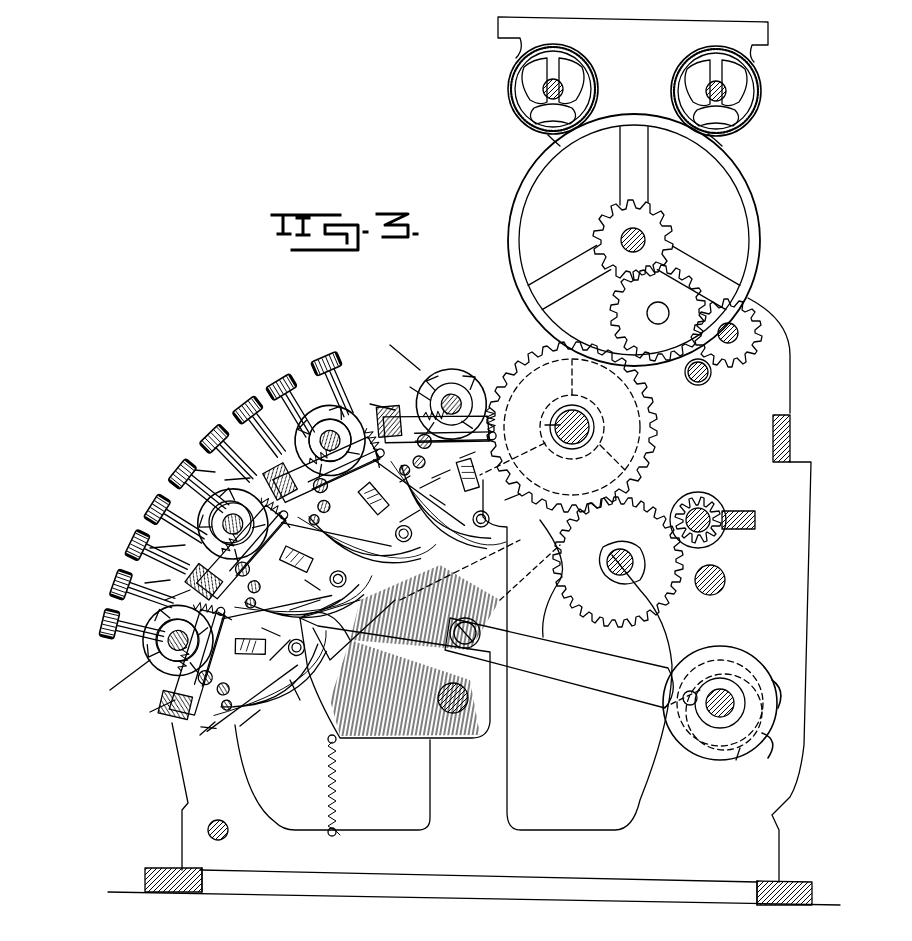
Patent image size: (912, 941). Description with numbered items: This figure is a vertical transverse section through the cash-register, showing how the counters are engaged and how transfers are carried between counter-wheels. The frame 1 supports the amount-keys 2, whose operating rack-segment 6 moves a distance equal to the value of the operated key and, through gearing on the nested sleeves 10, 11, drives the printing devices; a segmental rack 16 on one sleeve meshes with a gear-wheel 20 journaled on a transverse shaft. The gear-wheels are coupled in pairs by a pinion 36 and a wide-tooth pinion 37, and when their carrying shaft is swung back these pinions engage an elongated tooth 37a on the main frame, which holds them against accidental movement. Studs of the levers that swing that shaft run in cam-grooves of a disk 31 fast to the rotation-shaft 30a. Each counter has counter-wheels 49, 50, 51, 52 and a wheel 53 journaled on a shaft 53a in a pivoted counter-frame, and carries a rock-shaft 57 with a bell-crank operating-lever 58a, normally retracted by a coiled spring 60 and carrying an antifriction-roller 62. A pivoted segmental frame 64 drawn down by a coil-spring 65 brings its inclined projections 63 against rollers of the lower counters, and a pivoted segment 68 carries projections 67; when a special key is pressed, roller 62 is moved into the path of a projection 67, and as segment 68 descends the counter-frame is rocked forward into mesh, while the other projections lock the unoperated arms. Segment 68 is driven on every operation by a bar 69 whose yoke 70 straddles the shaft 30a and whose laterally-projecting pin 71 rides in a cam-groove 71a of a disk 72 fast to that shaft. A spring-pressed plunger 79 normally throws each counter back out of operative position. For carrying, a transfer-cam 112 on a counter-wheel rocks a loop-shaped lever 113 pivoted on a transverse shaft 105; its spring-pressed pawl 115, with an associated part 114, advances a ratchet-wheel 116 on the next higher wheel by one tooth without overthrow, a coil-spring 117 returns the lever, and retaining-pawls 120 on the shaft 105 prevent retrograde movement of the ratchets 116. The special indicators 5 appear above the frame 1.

The frame 1 is at (474, 461).
The amount-keys 2 is at (110, 540).
The special indicators 5 is at (668, 78).
The operating rack-segment 6 is at (577, 655).
The nested sleeve 10 is at (600, 436).
The nested sleeve 11 is at (572, 405).
The segmental rack 16 is at (602, 476).
The gear-wheel 20 is at (635, 356).
The rotation-shaft 30a is at (716, 690).
The disk 31 is at (633, 560).
The pinion 36 is at (726, 578).
The wide-tooth pinion 37 is at (698, 495).
The elongated tooth 37a is at (741, 509).
The indicator wheel 49 is at (168, 642).
The indicator wheel 50 is at (218, 520).
The indicator wheel 51 is at (305, 400).
The indicator wheel 52 is at (437, 459).
The cam disk 53 is at (225, 522).
The shaft 53a is at (160, 640).
The rock-shaft 57 is at (530, 571).
The bell-crank operating-lever 58a is at (355, 690).
The coiled spring 60 is at (353, 572).
The antifriction-roller 62 is at (392, 552).
The inclined projection 63 is at (354, 627).
The pivoted segmental frame 64 is at (395, 679).
The coil-spring 65 is at (326, 768).
The projection 67 is at (352, 606).
The pivoted segment 68 is at (435, 595).
The bar 69 is at (559, 663).
The yoke 70 is at (760, 748).
The laterally-projecting pin 71 is at (684, 700).
The cam-groove 71a is at (690, 728).
The disk 72 is at (739, 773).
The spring-pressed plunger 79 is at (362, 601).
The transverse shaft 105 is at (360, 588).
The transfer-cam 112 is at (500, 372).
The loop-shaped lever 113 is at (120, 652).
The stop 114 is at (263, 489).
The spring-pressed pawl 115 is at (534, 422).
The ratchet-wheel 116 is at (265, 513).
The coil-spring 117 is at (276, 546).
The retaining-pawl 120 is at (319, 606).